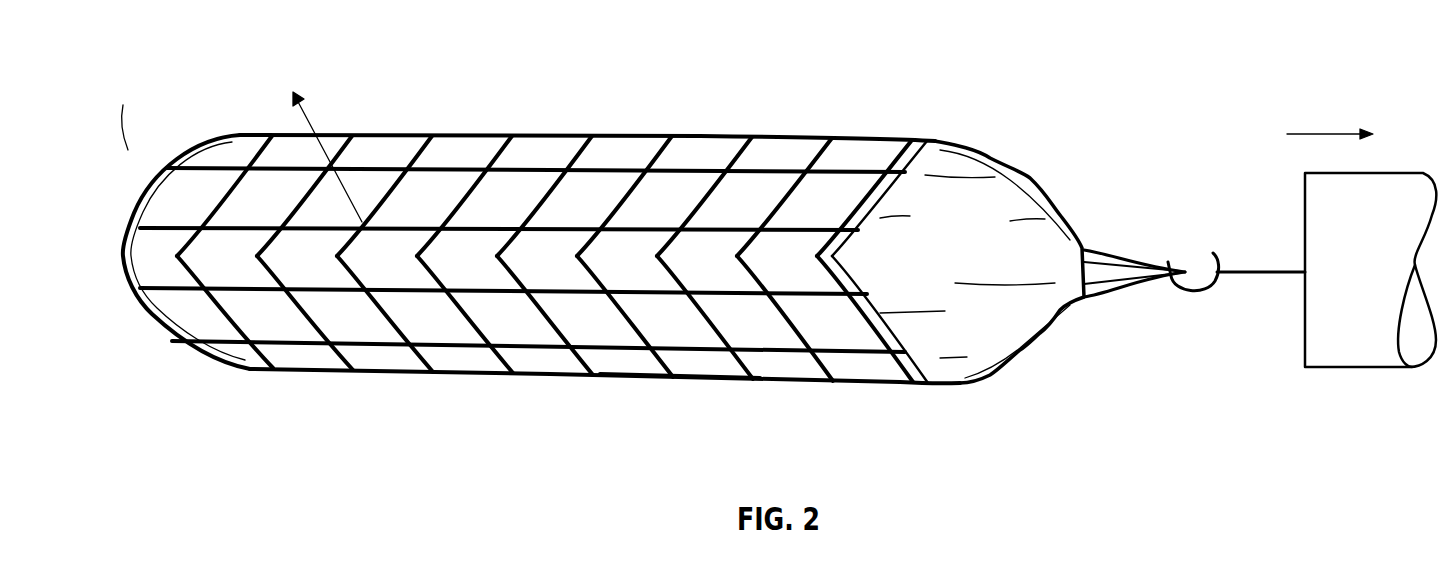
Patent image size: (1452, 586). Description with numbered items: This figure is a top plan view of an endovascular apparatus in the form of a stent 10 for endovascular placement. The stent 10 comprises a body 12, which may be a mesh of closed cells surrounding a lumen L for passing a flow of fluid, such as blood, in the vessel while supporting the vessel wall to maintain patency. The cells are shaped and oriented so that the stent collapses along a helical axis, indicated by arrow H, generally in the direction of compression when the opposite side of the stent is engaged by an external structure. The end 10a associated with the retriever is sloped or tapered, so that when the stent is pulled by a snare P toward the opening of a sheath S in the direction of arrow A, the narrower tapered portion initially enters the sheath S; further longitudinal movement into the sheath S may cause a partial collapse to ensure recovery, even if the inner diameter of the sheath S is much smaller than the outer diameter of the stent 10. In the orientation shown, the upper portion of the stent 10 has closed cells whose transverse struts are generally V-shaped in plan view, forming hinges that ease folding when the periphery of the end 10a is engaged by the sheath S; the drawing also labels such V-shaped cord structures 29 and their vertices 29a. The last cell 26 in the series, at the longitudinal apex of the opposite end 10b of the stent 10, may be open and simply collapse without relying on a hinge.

The stent 10 is at (766, 401).
The end of the stent 10a is at (1130, 226).
The opposite end of the stent 10b is at (177, 79).
The body 12 is at (480, 362).
The last cell 26 is at (130, 284).
The chevron-shaped cords 29 is at (472, 263).
The chevron vertices 29a is at (740, 250).
The arrow H is at (324, 158).
The lumen L is at (1010, 220).
The arrow A is at (1318, 134).
The sheath S is at (1371, 284).
The snare P is at (1278, 273).